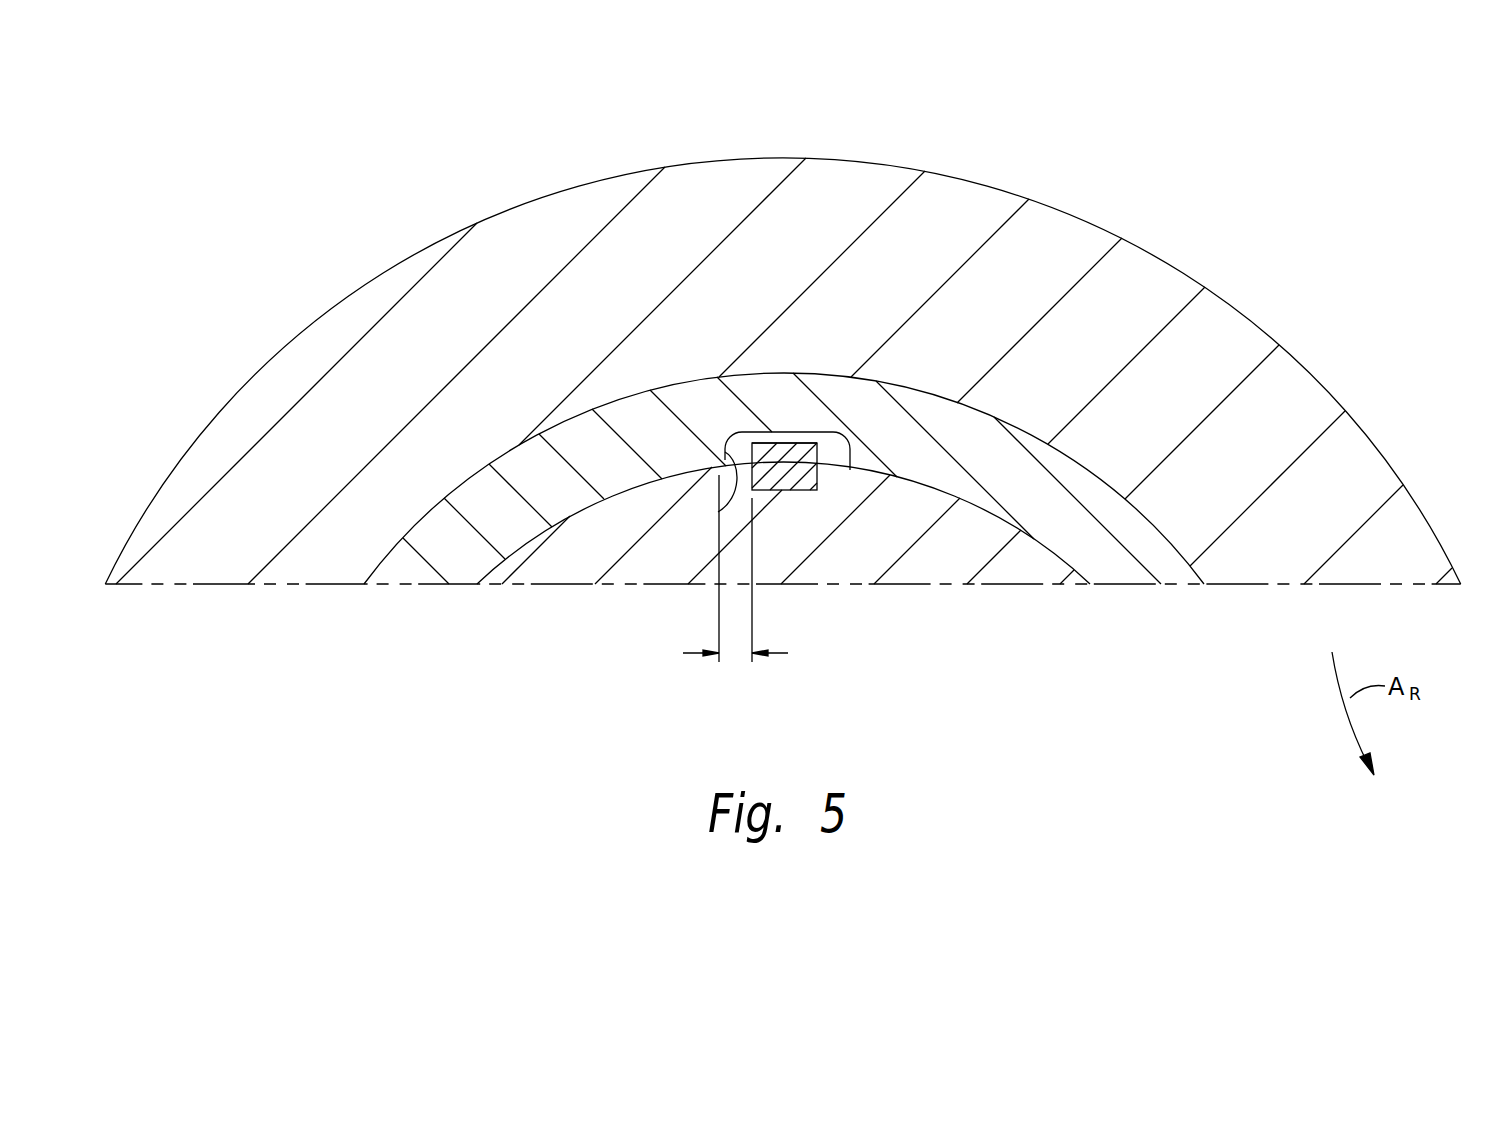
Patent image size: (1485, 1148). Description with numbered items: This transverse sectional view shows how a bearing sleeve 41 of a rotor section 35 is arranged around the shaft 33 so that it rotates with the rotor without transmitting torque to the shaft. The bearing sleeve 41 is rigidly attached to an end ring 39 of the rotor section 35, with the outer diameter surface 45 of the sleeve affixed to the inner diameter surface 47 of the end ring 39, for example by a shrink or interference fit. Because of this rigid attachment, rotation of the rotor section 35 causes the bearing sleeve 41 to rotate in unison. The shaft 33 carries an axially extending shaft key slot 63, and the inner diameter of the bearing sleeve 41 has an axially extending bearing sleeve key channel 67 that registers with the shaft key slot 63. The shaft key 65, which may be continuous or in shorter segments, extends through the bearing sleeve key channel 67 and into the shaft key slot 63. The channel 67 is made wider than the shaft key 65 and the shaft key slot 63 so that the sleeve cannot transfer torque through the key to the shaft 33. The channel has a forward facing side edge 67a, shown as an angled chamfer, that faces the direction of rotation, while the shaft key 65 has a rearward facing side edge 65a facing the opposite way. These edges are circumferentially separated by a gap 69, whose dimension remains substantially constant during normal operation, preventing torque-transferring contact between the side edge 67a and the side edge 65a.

The shaft 33 is at (903, 572).
The rotor section 35 is at (498, 186).
The end ring 39 is at (370, 282).
The bearing sleeve 41 is at (900, 460).
The outer diameter surface 45 is at (1160, 530).
The inner diameter surface 47 is at (569, 423).
The shaft key slot 63 is at (799, 487).
The shaft key 65 is at (788, 477).
The rearward facing side edge 65a is at (752, 448).
The bearing sleeve key channel 67 is at (771, 492).
The forward facing side edge 67a is at (719, 512).
The gap 69 is at (735, 653).